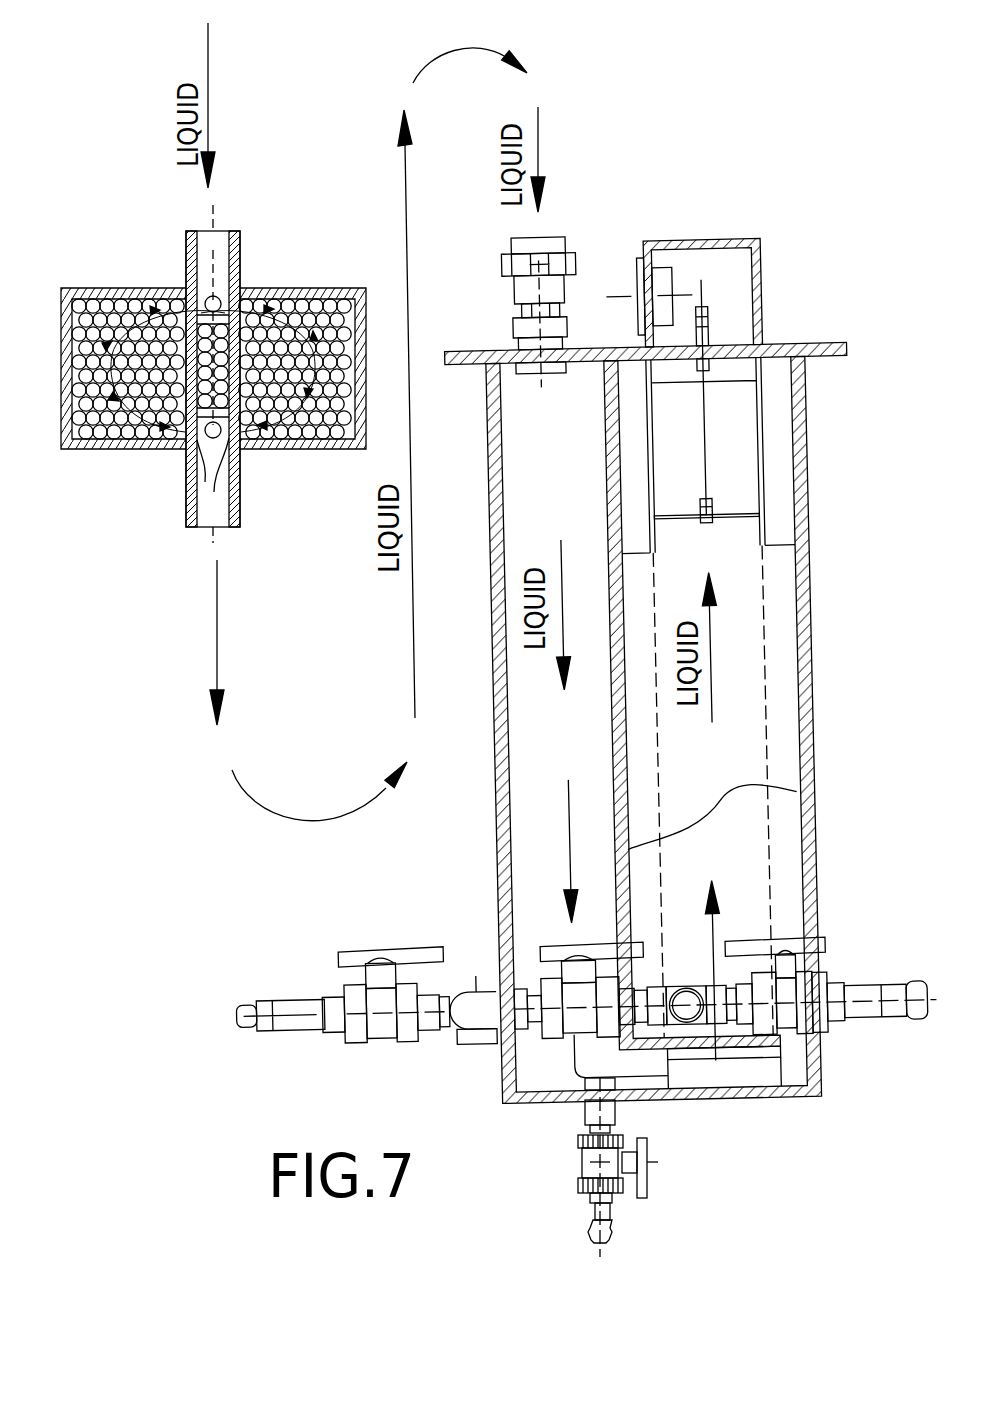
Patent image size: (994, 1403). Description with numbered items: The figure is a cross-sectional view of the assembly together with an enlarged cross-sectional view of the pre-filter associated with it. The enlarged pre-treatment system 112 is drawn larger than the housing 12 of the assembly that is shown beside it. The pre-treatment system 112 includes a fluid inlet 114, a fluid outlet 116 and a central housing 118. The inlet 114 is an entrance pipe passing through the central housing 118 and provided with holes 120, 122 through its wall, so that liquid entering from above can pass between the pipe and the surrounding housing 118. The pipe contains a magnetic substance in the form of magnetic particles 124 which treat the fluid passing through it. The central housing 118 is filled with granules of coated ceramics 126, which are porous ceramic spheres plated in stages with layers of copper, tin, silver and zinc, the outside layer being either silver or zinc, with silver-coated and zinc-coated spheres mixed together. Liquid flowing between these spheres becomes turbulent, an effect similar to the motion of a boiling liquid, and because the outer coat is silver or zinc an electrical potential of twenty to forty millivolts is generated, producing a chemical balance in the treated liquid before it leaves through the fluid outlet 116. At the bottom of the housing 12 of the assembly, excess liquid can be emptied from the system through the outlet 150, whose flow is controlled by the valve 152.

The treatment vessel housing 12 is at (810, 340).
The pre-treatment system 112 is at (162, 258).
The fluid inlet 114 is at (212, 258).
The fluid outlet 116 is at (241, 491).
The central housing 118 is at (266, 451).
The hole 120 is at (198, 488).
The hole 122 is at (215, 296).
The magnetic particles 124 is at (287, 322).
The granules of coated ceramics 126 is at (121, 311).
The outlet 150 is at (612, 1207).
The valve 152 is at (643, 1148).